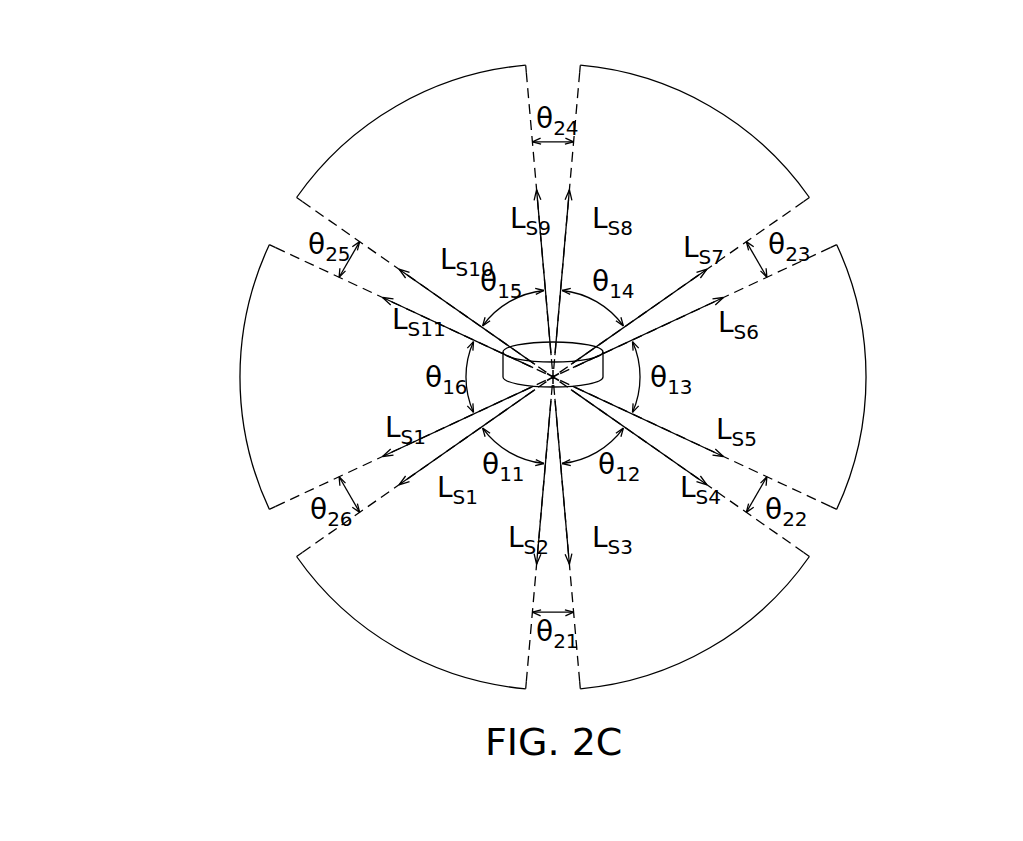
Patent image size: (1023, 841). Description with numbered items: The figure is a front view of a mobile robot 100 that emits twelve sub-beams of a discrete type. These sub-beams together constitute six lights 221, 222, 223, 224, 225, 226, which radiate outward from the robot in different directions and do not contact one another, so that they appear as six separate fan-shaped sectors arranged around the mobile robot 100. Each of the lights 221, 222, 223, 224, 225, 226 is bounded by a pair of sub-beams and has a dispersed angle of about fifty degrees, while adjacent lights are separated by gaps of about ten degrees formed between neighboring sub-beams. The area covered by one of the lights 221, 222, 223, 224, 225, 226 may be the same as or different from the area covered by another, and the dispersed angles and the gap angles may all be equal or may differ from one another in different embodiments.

The mobile robot 100 is at (238, 80).
The light 221 is at (393, 648).
The light 222 is at (712, 648).
The light 223 is at (868, 378).
The light 224 is at (710, 95).
The light 225 is at (395, 103).
The light 226 is at (240, 378).